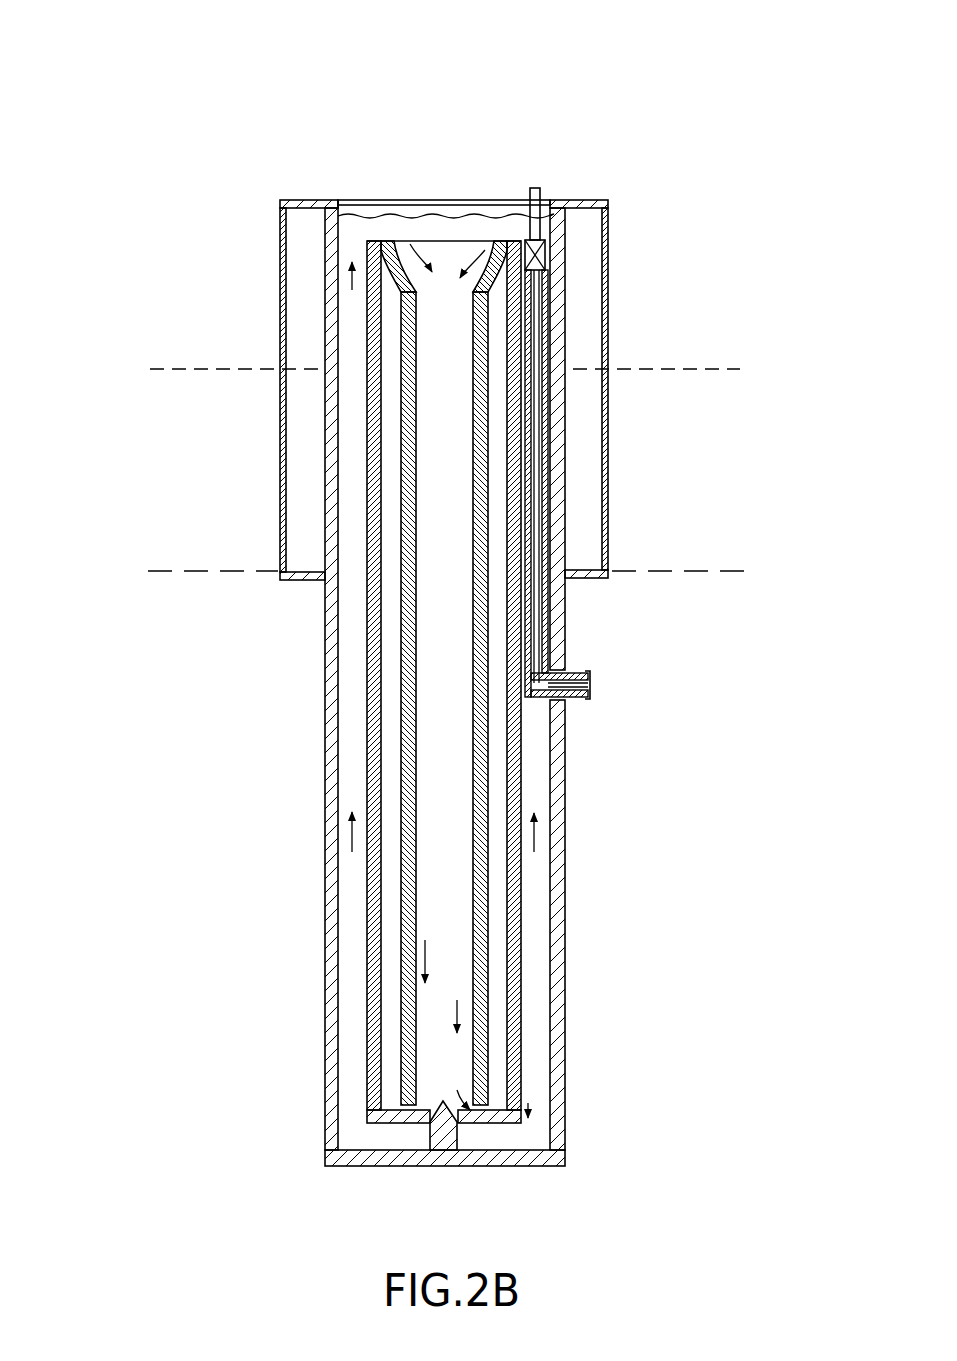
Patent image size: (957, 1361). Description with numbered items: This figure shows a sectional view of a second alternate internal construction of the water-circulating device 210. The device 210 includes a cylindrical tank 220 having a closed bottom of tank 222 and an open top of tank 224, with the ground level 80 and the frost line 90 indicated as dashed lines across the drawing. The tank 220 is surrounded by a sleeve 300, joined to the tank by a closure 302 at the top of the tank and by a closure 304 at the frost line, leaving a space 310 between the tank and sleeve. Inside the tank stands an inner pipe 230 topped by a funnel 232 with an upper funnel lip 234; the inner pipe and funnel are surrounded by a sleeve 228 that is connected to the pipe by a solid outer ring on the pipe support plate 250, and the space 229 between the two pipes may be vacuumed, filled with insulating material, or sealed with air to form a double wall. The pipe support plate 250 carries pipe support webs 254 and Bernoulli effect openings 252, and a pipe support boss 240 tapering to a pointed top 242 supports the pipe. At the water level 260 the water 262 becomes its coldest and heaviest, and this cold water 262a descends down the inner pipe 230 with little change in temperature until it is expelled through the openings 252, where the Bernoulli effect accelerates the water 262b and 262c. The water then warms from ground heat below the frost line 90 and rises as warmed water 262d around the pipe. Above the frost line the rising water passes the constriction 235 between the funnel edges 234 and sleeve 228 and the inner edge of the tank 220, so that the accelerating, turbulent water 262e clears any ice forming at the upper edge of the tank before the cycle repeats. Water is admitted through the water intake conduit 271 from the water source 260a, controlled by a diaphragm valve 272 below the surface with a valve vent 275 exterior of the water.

The device 210 is at (668, 134).
The cylindrical tank 220 is at (557, 297).
The closed bottom of tank 222 is at (362, 1166).
The open top of tank 224 is at (353, 200).
The sleeve 228 is at (517, 722).
The space between the pipes 229 is at (498, 763).
The inner pipe 230 is at (490, 352).
The funnel 232 is at (405, 241).
The upper funnel lip 234 is at (280, 205).
The constriction 235 is at (368, 240).
The pipe support boss 240 is at (430, 1165).
The pointed top of pipe support boss 242 is at (410, 1100).
The pipe support plate 250 is at (370, 1118).
The openings in pipe support plate 252 is at (470, 1113).
The pipe support webs 254 is at (400, 1117).
The water level 260 is at (493, 216).
The water source for replenishing water in tank 260a is at (600, 685).
The coldest water starting to descend 262 is at (380, 228).
The cold water being directed and accelerated by funnel 262a is at (406, 263).
The accelerated cold water nearing bottom of pipe 262b is at (423, 957).
The cold water leaving pipe with Bernoulli effect 262c is at (485, 1130).
The warmed water rising about pipe 262d is at (347, 838).
The warmed water flowing between funnel lip and tank edge 262e is at (350, 280).
The water intake conduit 271 is at (540, 515).
The diaphragm valve 272 is at (545, 262).
The valve vent 275 is at (538, 190).
The sleeve surrounding tank 300 is at (281, 455).
The closure between top of tank and sleeve 302 is at (282, 200).
The closure between tank and sleeve at frost line 304 is at (288, 581).
The space between tank and sleeve 310 is at (295, 510).
The ground level 80 is at (722, 368).
The frost line 90 is at (200, 572).